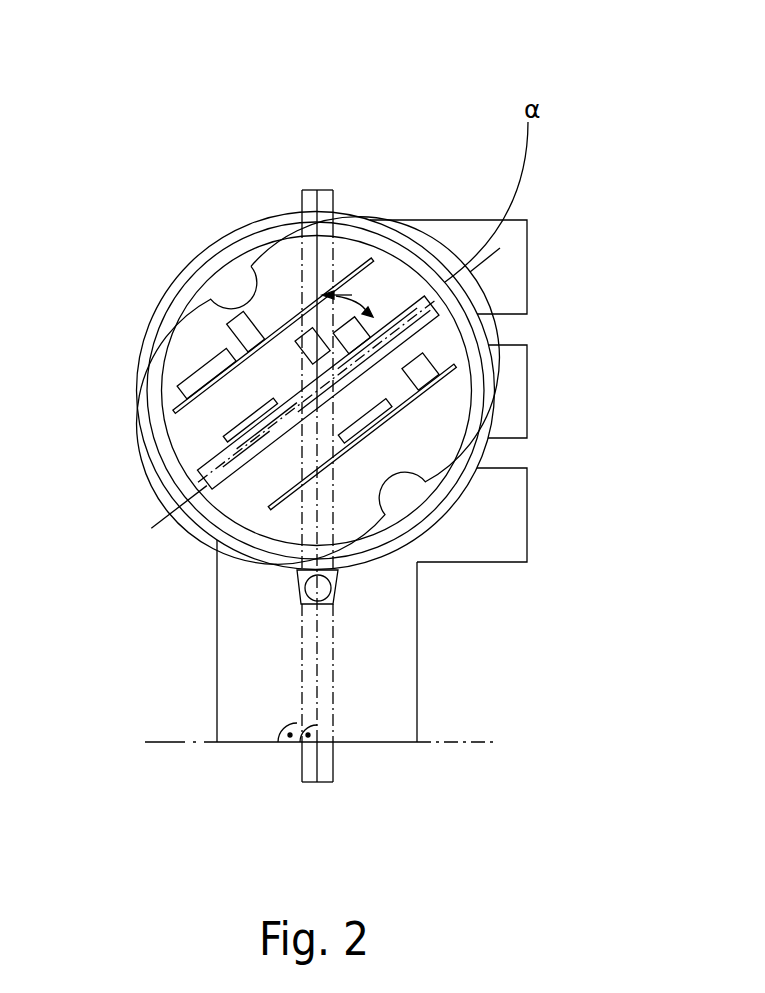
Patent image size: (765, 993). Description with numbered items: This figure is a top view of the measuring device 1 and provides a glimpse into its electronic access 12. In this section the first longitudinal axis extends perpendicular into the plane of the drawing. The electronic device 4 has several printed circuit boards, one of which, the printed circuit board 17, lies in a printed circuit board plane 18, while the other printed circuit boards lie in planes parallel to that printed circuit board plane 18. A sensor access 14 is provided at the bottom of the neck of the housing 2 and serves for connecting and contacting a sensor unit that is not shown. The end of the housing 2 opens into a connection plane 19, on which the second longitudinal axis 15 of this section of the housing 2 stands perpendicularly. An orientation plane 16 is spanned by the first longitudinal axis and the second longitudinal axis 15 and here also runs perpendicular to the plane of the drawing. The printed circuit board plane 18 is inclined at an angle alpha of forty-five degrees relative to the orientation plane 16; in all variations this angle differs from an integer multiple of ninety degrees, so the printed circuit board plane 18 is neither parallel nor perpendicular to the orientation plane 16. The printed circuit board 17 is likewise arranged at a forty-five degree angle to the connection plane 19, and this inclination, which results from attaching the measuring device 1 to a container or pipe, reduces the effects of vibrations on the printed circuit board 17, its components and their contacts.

The measuring device 1 is at (196, 165).
The housing 2 is at (183, 283).
The electronic device 4 is at (420, 437).
The electronic access 12 is at (442, 293).
The sensor access 14 is at (262, 745).
The second longitudinal axis 15 is at (317, 692).
The orientation plane 16 is at (332, 218).
The printed circuit board 17 is at (420, 348).
The printed circuit board plane 18 is at (485, 260).
The connection plane 19 is at (442, 742).